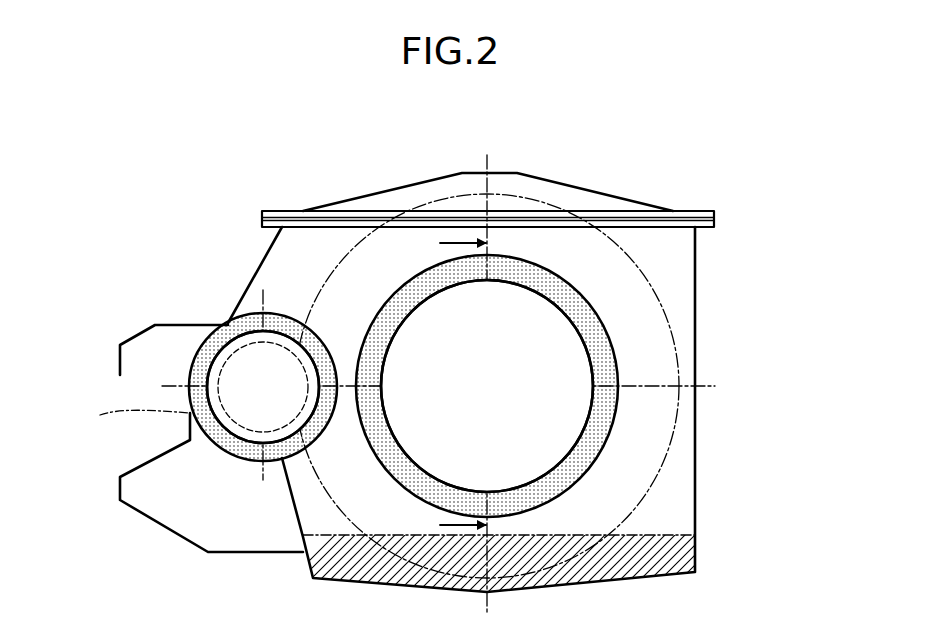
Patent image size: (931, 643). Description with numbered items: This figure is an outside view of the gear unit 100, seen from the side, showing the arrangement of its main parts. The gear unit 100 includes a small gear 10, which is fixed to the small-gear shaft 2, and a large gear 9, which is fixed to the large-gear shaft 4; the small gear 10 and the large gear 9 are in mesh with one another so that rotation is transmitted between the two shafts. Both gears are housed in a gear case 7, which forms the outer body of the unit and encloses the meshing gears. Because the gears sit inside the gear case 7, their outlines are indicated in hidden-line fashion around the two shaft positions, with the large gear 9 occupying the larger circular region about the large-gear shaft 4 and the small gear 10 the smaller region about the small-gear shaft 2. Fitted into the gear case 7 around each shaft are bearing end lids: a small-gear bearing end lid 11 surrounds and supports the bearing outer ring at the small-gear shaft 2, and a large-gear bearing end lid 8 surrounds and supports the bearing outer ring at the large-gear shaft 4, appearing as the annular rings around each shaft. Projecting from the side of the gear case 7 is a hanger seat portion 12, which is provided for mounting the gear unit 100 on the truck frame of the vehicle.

The gear unit 100 is at (586, 170).
The small-gear shaft 2 is at (240, 368).
The large-gear shaft 4 is at (562, 342).
The gear case 7 is at (682, 255).
The large-gear bearing end lid 8 is at (602, 373).
The large gear 9 is at (675, 432).
The small gear 10 is at (100, 415).
The small-gear bearing end lid 11 is at (220, 333).
The hanger seat portion 12 is at (126, 488).